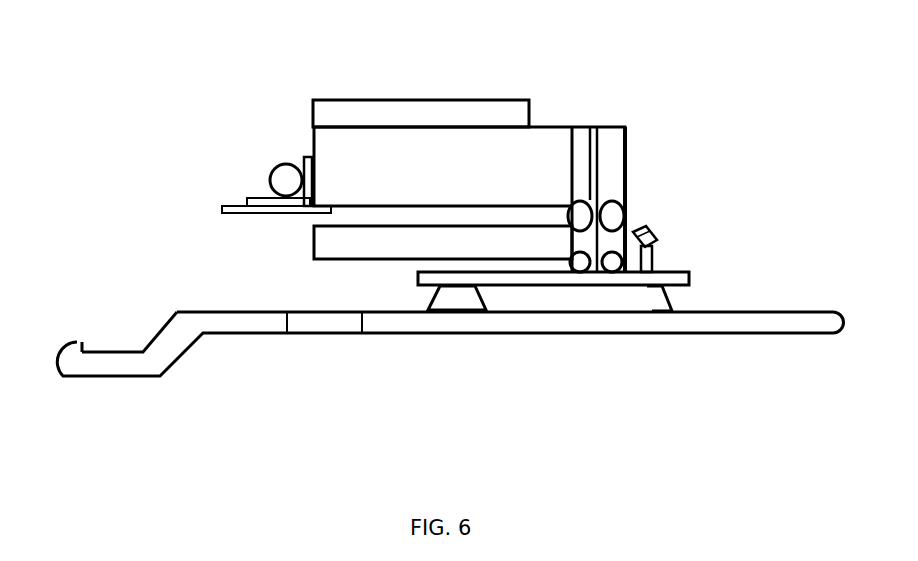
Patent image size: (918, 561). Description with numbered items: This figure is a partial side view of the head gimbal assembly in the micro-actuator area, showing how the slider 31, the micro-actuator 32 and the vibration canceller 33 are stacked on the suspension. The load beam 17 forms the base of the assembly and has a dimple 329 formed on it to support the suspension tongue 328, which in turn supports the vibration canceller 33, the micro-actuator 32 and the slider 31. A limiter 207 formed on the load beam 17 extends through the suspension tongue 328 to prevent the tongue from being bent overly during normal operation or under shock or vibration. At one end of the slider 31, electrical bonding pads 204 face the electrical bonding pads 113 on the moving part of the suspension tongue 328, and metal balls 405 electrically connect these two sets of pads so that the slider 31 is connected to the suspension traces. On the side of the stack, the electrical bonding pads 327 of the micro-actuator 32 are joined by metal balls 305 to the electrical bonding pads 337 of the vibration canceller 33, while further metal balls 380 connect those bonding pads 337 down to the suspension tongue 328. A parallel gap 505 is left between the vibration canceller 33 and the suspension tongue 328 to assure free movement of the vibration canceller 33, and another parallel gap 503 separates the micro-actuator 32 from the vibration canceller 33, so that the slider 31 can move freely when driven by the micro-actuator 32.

The slider 31 is at (385, 113).
The micro-actuator 32 is at (542, 150).
The electrical bonding pads 327 is at (583, 150).
The metal balls 305 is at (586, 208).
The metal balls 380 is at (583, 270).
The electrical bonding pads 337 is at (604, 244).
The limiter 207 is at (652, 232).
The electrical bonding pads 204 is at (306, 157).
The metal balls 405 is at (285, 180).
The electrical bonding pads 113 is at (250, 197).
The parallel gap 503 is at (348, 211).
The parallel gap 505 is at (423, 265).
The suspension tongue 328 is at (532, 273).
The dimple 329 is at (462, 292).
The vibration canceller 33 is at (495, 240).
The load beam 17 is at (118, 357).